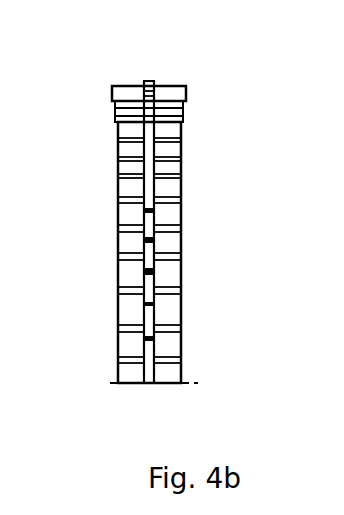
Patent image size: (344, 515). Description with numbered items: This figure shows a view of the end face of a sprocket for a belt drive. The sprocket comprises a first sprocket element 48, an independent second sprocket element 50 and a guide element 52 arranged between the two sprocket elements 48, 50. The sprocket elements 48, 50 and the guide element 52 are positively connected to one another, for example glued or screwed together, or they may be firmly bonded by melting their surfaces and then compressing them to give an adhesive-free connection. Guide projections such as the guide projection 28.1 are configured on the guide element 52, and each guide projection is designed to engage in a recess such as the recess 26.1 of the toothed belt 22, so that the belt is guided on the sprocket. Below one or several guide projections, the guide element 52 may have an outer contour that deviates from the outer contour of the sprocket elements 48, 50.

The toothed belt 22 is at (191, 97).
The recess 26.1 is at (145, 85).
The guide projection 28.1 is at (153, 83).
The first sprocket element 48 is at (131, 397).
The second sprocket element 50 is at (166, 397).
The guide element 52 is at (149, 397).